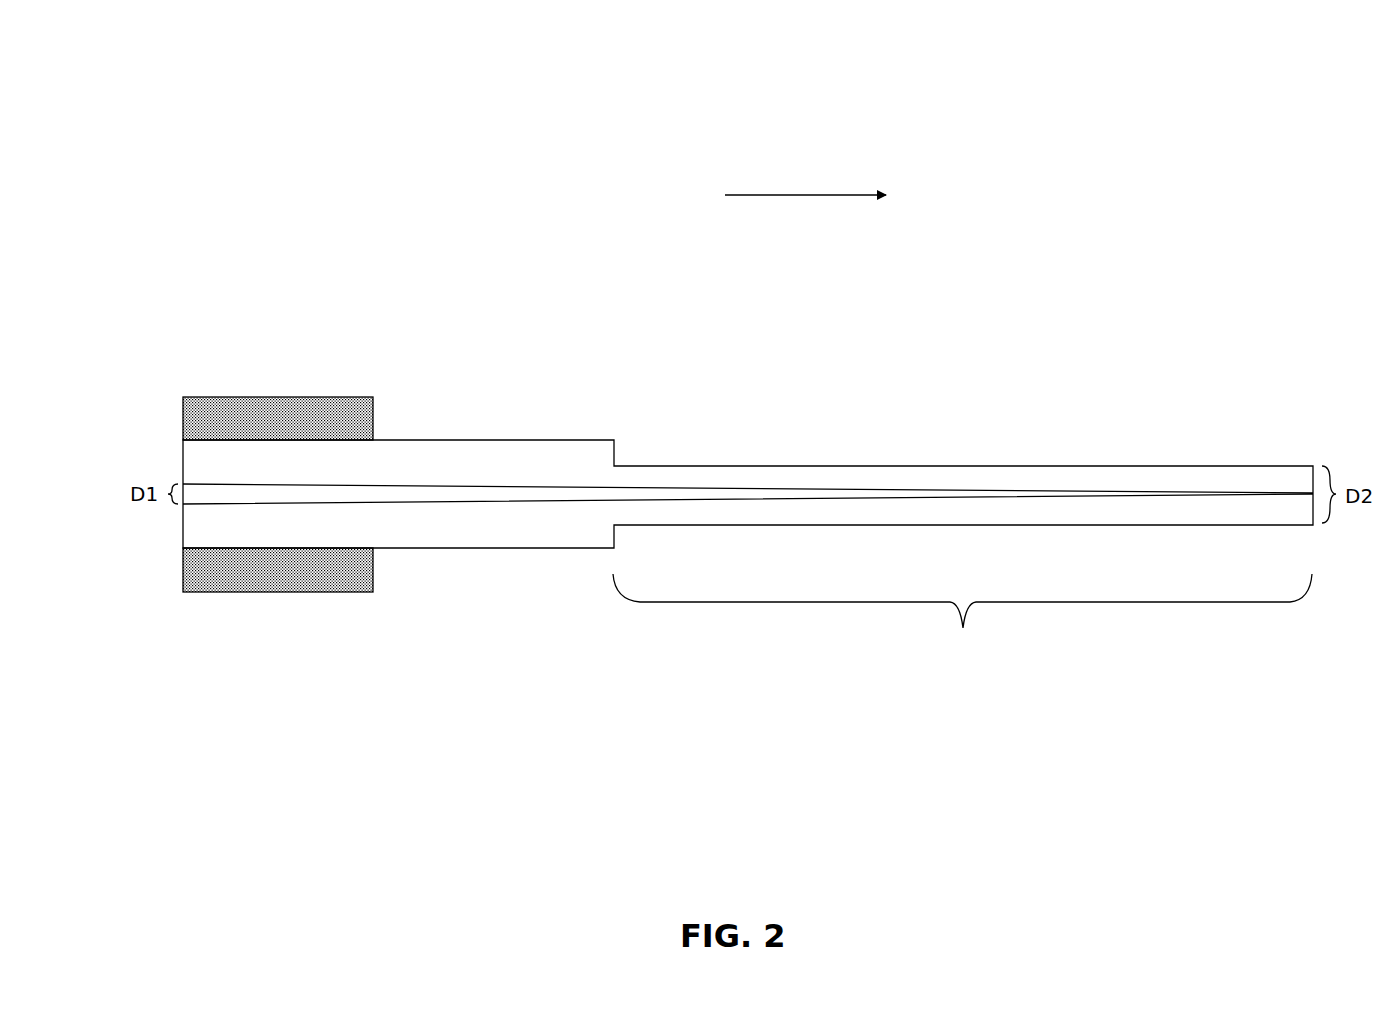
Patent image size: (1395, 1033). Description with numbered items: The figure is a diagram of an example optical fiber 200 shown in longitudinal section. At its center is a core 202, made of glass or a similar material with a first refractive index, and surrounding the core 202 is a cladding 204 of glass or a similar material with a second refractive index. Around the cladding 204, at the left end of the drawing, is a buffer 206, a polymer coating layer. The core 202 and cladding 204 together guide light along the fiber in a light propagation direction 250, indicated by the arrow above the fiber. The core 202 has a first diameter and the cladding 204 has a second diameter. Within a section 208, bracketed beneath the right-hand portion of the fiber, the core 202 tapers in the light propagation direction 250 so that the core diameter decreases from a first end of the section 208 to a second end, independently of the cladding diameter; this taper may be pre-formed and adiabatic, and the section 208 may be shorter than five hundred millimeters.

The optical fiber 200 is at (240, 54).
The core 202 is at (660, 492).
The cladding 204 is at (502, 455).
The buffer 206 is at (313, 410).
The section 208 is at (962, 617).
The light propagation direction 250 is at (809, 194).